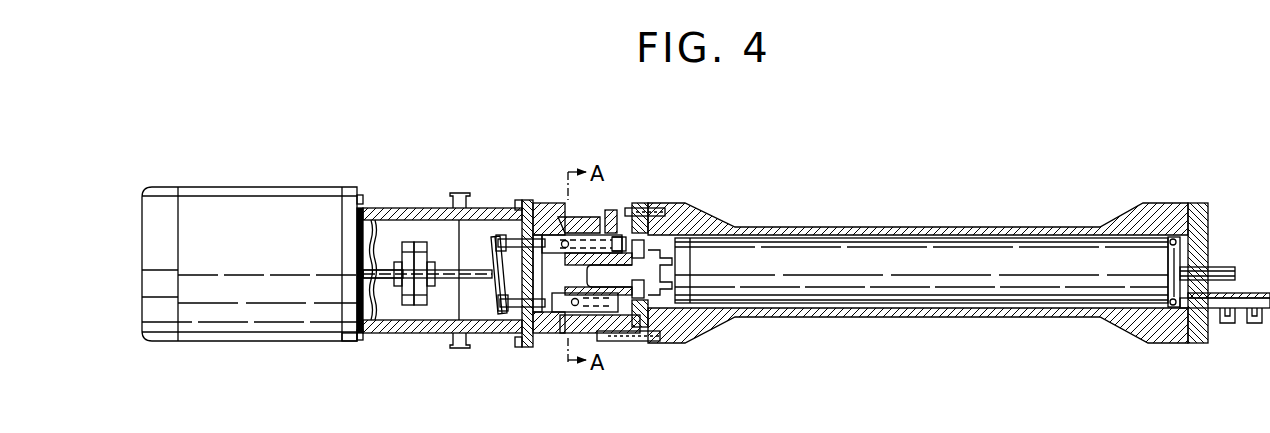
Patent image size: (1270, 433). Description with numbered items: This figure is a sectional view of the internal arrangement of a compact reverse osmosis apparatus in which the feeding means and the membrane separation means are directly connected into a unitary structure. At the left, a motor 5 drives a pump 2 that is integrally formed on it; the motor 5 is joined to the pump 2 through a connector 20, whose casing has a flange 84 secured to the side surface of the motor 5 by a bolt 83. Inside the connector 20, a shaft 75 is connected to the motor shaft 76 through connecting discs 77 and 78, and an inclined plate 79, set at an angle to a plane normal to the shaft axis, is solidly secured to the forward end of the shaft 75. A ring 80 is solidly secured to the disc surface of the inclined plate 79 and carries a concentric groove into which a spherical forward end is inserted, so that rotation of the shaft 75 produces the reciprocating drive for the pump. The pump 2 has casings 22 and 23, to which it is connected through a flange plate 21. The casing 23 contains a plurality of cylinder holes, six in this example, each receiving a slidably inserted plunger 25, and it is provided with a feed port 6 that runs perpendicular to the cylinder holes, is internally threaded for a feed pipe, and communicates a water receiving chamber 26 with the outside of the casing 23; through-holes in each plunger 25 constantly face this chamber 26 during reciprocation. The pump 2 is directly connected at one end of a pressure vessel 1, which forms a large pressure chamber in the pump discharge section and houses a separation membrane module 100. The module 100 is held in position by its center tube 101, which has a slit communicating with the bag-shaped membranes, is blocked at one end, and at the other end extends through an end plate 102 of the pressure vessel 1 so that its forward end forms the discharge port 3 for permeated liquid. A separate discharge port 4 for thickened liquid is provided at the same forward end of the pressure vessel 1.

The pressure vessel 1 is at (880, 228).
The pump 2 is at (556, 194).
The discharge port for permeated liquid 3 is at (1237, 268).
The discharge port for thickened liquid 4 is at (1227, 323).
The motor 5 is at (243, 187).
The feed port 6 is at (578, 215).
The connector 20 is at (413, 208).
The flange plate 21 is at (527, 200).
The casing 22 is at (489, 333).
The casing 23 is at (607, 222).
The plunger 25 is at (626, 218).
The water receiving chamber 26 is at (568, 292).
The shaft 75 is at (474, 279).
The motor shaft 76 is at (383, 270).
The connecting disc 77 is at (418, 306).
The connecting disc 78 is at (407, 306).
The inclined plate 79 is at (492, 264).
The ring 80 is at (500, 237).
The bolt 83 is at (363, 200).
The flange 84 is at (346, 343).
The separation membrane module 100 is at (811, 255).
The center tube 101 is at (1218, 268).
The end plate 102 is at (1210, 218).